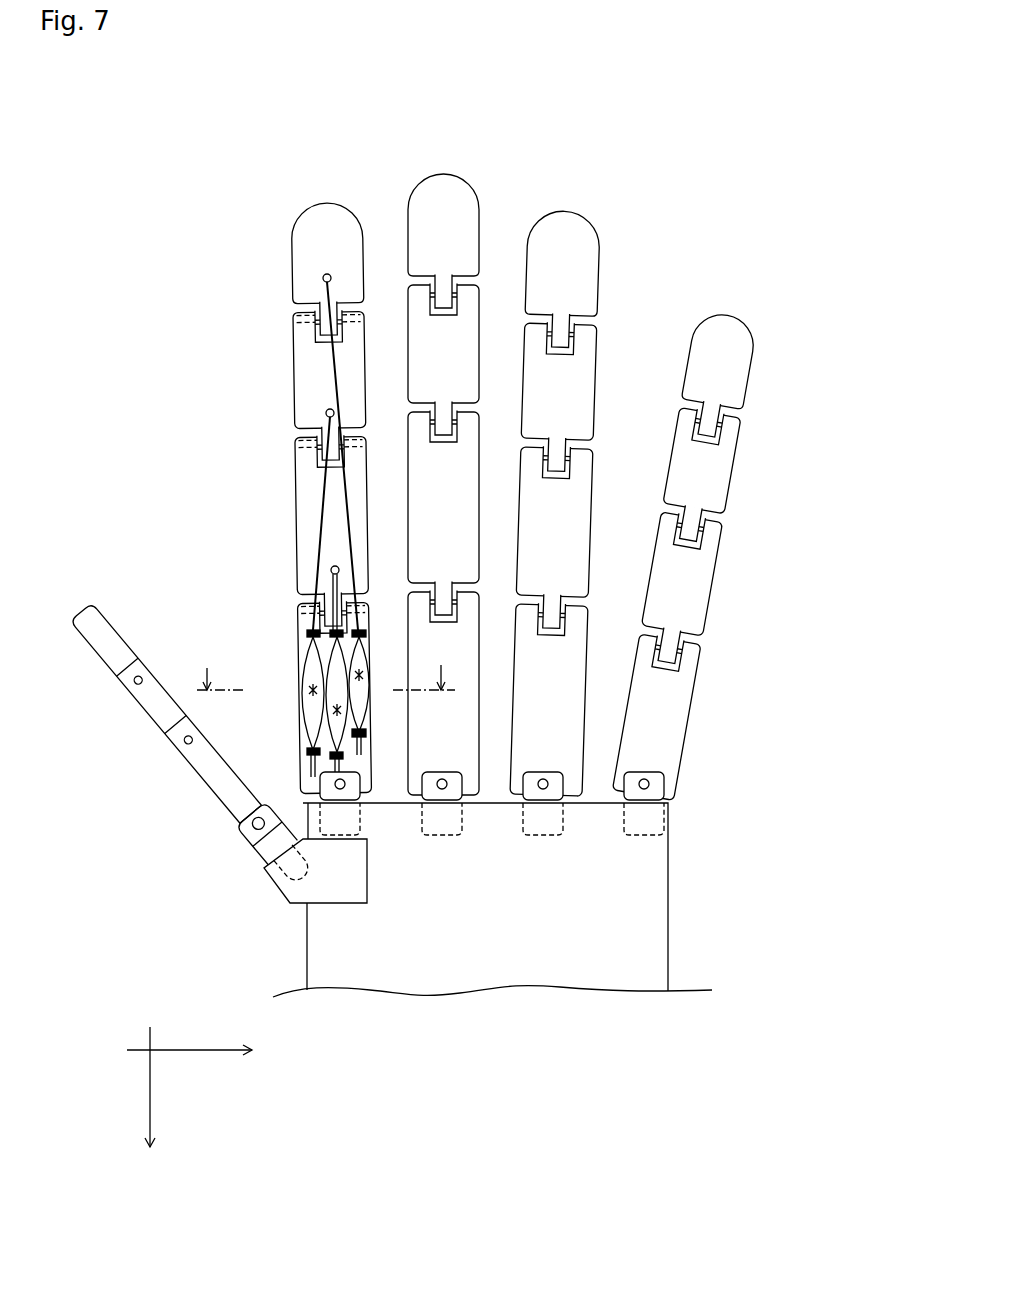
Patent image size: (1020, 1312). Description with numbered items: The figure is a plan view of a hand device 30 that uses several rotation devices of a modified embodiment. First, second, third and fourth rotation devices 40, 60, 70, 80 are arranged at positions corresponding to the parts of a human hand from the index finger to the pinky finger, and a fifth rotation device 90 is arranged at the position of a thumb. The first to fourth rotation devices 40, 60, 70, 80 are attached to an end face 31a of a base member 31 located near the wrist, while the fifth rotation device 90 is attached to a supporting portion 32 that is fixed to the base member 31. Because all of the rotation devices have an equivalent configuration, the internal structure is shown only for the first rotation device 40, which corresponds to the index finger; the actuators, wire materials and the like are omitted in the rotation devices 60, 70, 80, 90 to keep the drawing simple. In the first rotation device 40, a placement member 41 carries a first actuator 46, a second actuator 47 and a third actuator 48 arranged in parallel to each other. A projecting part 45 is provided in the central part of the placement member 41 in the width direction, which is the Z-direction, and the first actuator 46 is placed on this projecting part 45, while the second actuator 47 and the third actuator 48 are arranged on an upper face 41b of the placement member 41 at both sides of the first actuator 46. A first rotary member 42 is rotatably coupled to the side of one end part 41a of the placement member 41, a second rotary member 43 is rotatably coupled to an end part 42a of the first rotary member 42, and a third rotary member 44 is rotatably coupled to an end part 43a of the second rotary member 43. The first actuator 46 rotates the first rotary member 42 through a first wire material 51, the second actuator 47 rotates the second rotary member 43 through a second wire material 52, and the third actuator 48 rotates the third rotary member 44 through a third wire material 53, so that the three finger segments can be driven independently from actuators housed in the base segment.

The hand device 30 is at (814, 1200).
The base member 31 is at (678, 925).
The end face 31a is at (313, 800).
The supporting portion 32 is at (278, 892).
The first rotation device 40 is at (313, 480).
The placement member 41 is at (285, 674).
The one end part 41a is at (306, 605).
The upper face 41b is at (306, 628).
The first rotary member 42 is at (274, 492).
The end part 42a is at (297, 445).
The second rotary member 43 is at (266, 361).
The end part 43a is at (295, 317).
The third rotary member 44 is at (285, 248).
The projecting part 45 is at (351, 699).
The first actuator 46 is at (345, 712).
The second actuator 47 is at (302, 662).
The third actuator 48 is at (360, 653).
The first wire material 51 is at (312, 585).
The second wire material 52 is at (322, 505).
The third wire material 53 is at (340, 400).
The second rotation device 60 is at (440, 167).
The third rotation device 70 is at (558, 208).
The fourth rotation device 80 is at (725, 312).
The fifth rotation device 90 is at (160, 745).